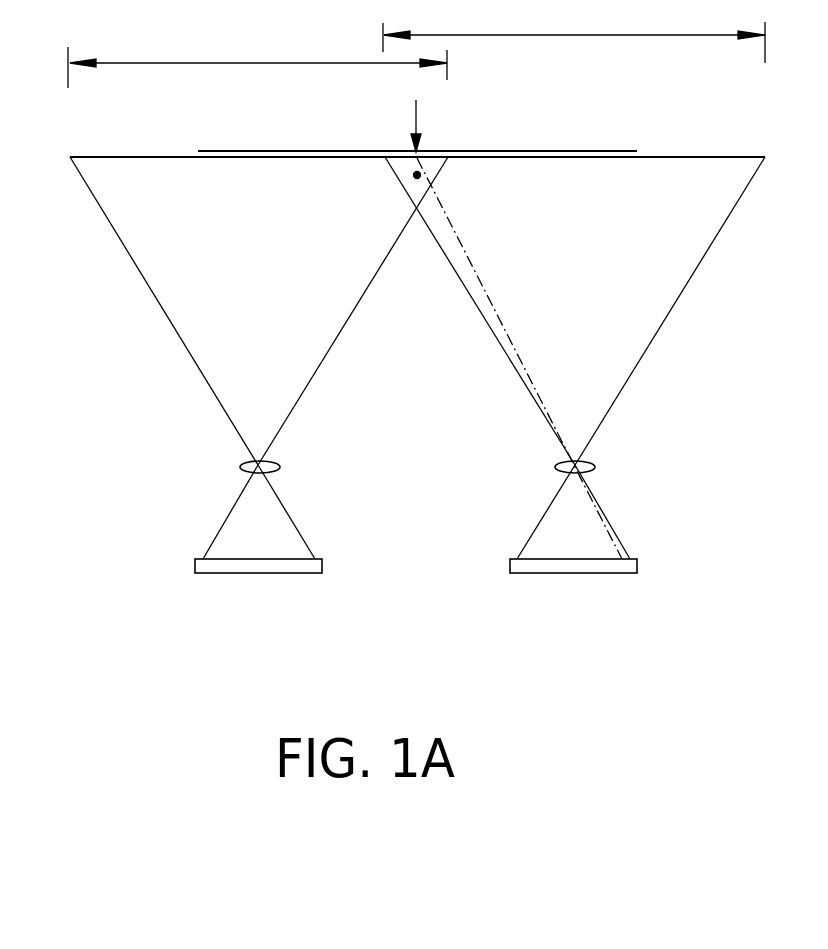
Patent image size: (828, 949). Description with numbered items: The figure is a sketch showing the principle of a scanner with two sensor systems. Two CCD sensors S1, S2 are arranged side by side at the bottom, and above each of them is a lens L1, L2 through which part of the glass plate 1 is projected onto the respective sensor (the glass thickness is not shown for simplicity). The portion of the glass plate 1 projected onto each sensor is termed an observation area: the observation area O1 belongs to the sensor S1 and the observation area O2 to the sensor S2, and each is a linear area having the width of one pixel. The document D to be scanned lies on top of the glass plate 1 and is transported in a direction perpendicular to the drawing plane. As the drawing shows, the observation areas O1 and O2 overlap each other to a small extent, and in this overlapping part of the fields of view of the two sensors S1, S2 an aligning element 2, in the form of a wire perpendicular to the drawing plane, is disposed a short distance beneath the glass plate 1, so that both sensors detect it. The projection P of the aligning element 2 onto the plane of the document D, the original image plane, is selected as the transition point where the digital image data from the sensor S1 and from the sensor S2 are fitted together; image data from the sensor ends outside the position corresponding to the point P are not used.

The glass plate 1 is at (690, 146).
The aligning element 2 is at (417, 175).
The projection of the aligning element P is at (416, 100).
The document D is at (578, 151).
The observation area of first sensor O1 is at (258, 62).
The observation area of second sensor O2 is at (600, 34).
The first lens L1 is at (280, 468).
The second lens L2 is at (595, 468).
The first CCD sensor S1 is at (236, 573).
The second CCD sensor S2 is at (566, 573).